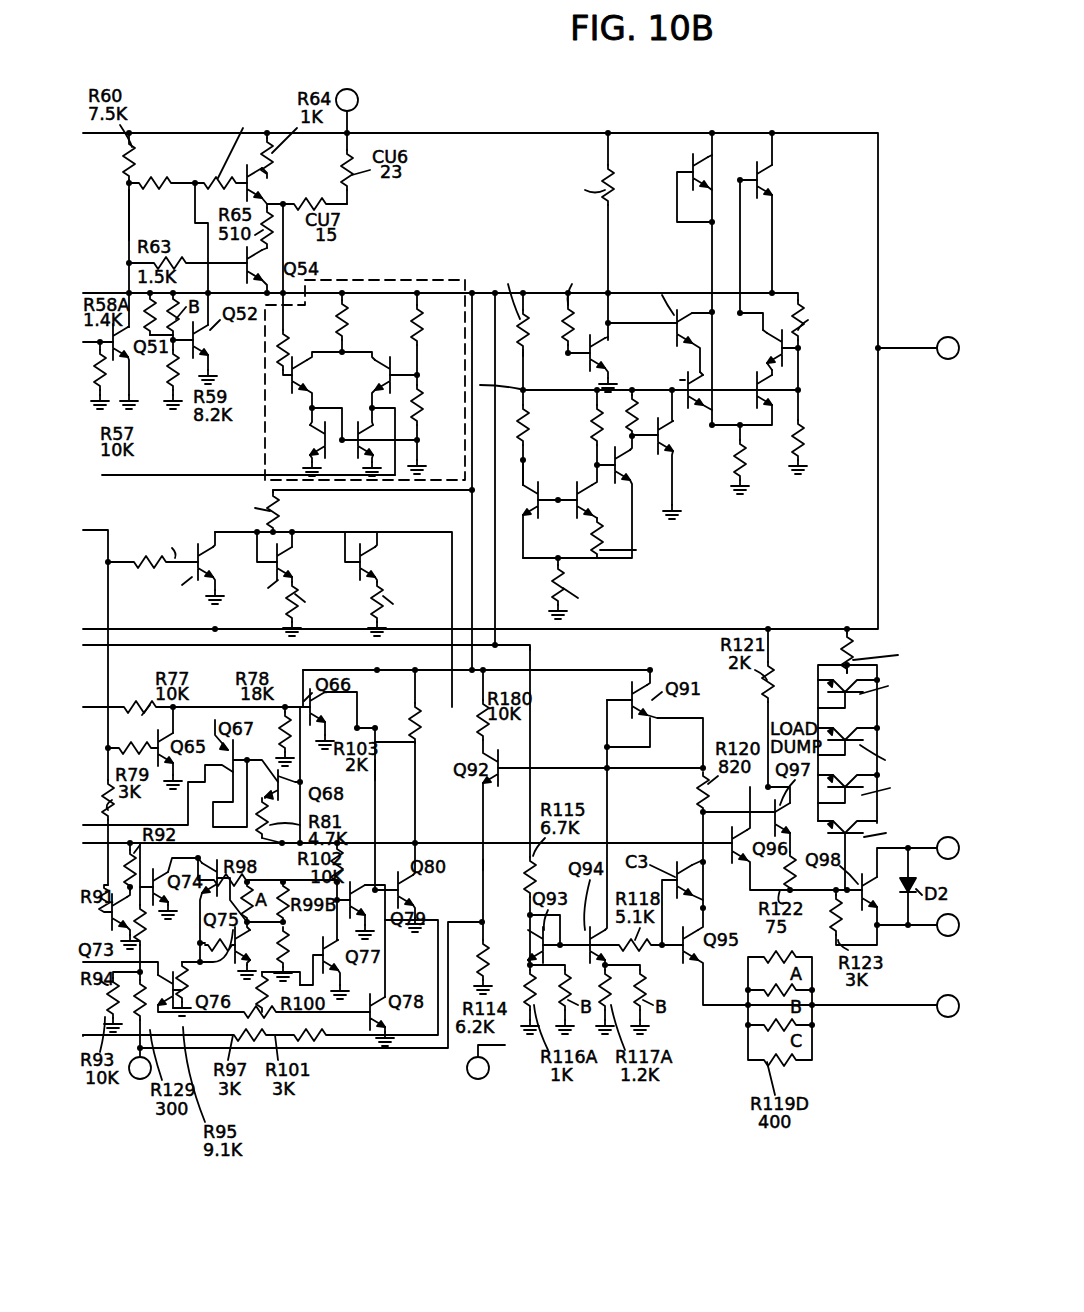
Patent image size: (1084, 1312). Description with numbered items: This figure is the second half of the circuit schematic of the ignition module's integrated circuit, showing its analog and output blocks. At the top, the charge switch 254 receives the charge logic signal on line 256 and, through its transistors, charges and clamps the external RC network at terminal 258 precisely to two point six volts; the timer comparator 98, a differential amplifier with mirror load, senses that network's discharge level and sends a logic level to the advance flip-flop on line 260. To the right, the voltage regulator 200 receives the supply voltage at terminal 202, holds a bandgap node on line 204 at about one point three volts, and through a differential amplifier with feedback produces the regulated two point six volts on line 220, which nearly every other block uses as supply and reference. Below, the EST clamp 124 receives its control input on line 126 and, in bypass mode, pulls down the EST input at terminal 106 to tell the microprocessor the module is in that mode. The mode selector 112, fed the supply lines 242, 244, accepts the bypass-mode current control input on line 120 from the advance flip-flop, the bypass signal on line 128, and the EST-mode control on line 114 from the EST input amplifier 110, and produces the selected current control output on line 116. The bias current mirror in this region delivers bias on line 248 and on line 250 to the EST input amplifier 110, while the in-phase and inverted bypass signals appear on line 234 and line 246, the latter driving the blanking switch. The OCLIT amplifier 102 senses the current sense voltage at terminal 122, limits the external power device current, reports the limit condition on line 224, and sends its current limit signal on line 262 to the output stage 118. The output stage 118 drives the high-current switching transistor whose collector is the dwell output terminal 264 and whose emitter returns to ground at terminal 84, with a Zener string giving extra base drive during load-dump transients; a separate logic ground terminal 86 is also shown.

The charge switch 254 is at (193, 143).
The line 256 is at (129, 213).
The terminal 258 is at (358, 100).
The timer comparator 98 is at (433, 288).
The line 260 is at (165, 483).
The voltage regulator 200 is at (670, 395).
The terminal 202 is at (918, 373).
The line 204 is at (555, 362).
The line 220 is at (618, 293).
The EST clamp 124 is at (280, 592).
The line 126 is at (117, 655).
The line 242 is at (215, 655).
The mode selector circuit 112 is at (376, 745).
The line 120 is at (106, 705).
The line 128 is at (133, 737).
The line 248 is at (85, 818).
The line 234 is at (158, 796).
The line 250 is at (210, 814).
The line 114 is at (380, 792).
The line 244 is at (353, 847).
The line 246 is at (200, 945).
The line 224 is at (435, 975).
The EST input terminal 106 is at (135, 1081).
The EST input amplifier 110 is at (310, 1030).
The logic ground terminal 86 is at (515, 1092).
The line 116 is at (492, 848).
The OCLIT amplifier 102 is at (662, 801).
The line 262 is at (727, 812).
The dwell output terminal 264 is at (955, 850).
The terminal 84 is at (955, 940).
The terminal 122 is at (958, 1000).
The output stage 118 is at (883, 718).